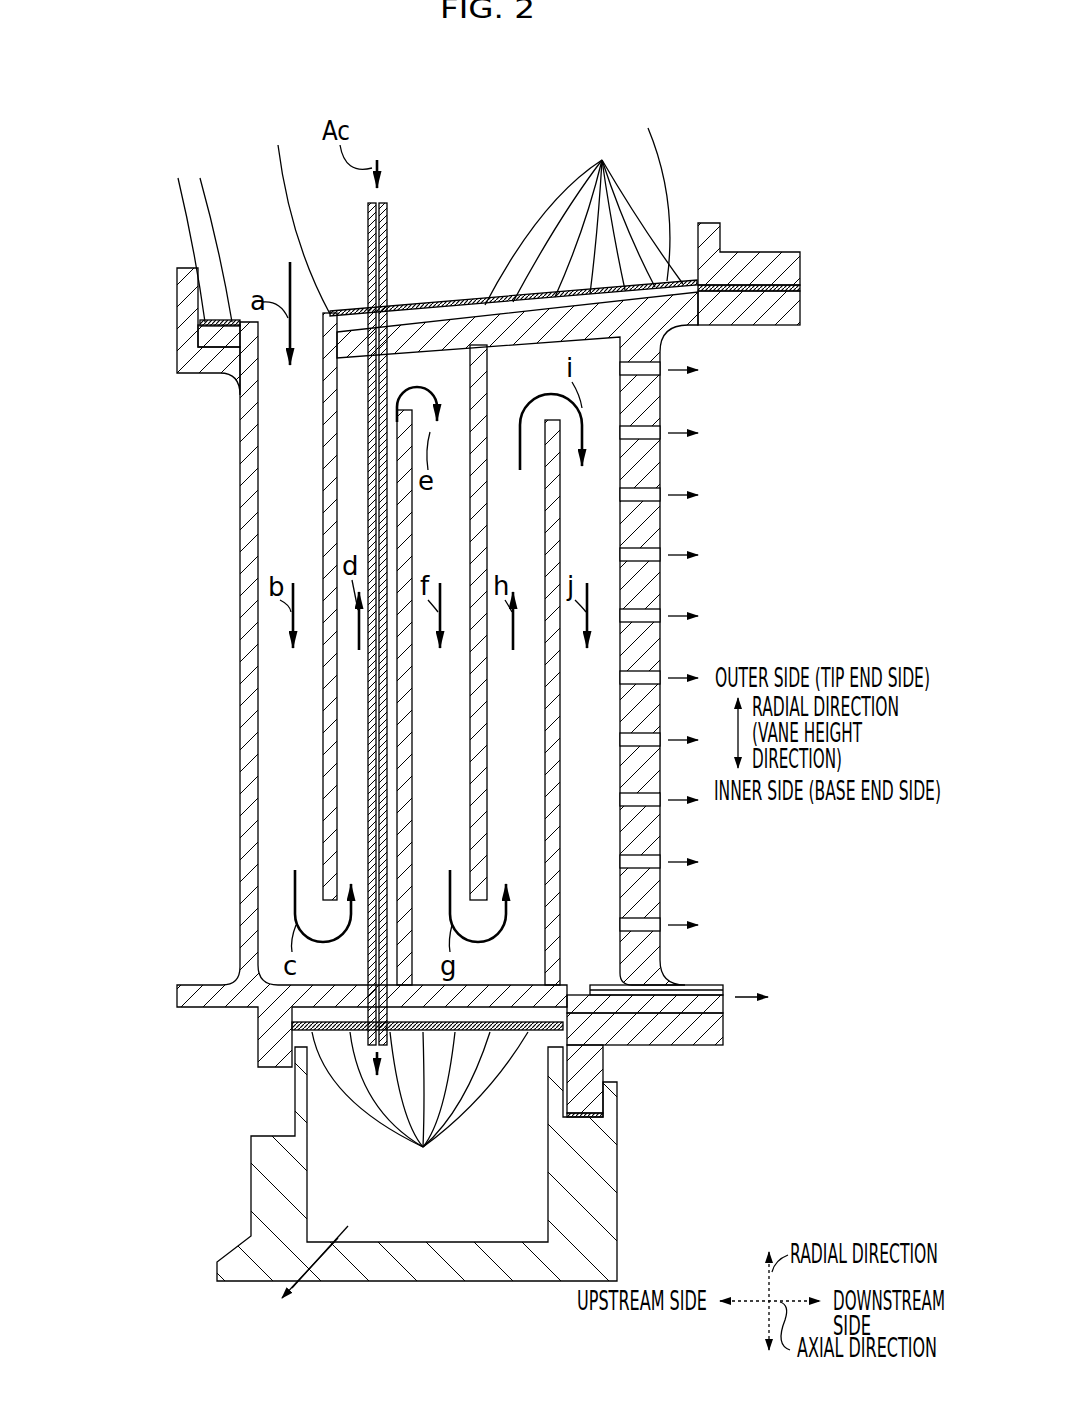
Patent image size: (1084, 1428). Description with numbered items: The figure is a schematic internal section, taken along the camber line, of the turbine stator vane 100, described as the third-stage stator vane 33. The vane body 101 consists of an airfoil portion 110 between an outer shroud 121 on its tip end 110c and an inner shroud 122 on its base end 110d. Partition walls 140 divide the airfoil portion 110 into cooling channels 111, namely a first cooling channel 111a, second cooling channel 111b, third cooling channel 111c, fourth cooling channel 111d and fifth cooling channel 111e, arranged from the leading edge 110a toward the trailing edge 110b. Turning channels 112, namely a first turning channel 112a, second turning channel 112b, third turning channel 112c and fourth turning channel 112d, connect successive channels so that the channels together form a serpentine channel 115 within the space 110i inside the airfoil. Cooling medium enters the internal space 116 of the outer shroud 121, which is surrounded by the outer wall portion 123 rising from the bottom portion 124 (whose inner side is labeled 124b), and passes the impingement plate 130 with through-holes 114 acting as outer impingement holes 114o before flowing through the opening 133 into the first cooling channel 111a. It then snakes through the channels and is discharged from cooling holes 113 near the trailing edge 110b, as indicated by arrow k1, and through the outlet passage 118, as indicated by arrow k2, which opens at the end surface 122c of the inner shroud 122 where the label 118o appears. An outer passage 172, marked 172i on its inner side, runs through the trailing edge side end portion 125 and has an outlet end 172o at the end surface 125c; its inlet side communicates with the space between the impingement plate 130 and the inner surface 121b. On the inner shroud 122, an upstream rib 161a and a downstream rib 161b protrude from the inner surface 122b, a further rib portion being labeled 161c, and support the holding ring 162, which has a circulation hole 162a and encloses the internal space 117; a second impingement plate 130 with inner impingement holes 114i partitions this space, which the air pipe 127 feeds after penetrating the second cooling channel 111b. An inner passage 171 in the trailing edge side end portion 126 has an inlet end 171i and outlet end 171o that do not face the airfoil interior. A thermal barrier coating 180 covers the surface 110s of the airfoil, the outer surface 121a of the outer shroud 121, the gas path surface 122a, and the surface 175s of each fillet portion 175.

The turbine stator vane 100 is at (673, 136).
The third-stage stator vane 33 is at (772, 91).
The vane body 101 is at (188, 570).
The airfoil portion 110 is at (235, 604).
The leading edge 110a is at (240, 800).
The trailing edge 110b is at (662, 895).
The tip end 110c is at (240, 420).
The base end 110d is at (262, 932).
The space inside the airfoil portion 110i is at (278, 760).
The surface of the airfoil portion 110s is at (238, 640).
The cooling channels 111 is at (270, 490).
The first cooling channel 111a is at (272, 491).
The second cooling channel 111b is at (355, 513).
The third cooling channel 111c is at (420, 546).
The fourth cooling channel 111d is at (500, 660).
The fifth cooling channel 111e is at (580, 700).
The turning channels 112 is at (535, 372).
The first turning channel 112a is at (275, 940).
The second turning channel 112b is at (548, 348).
The third turning channel 112c is at (622, 948).
The fourth turning channel 112d is at (662, 358).
The cooling holes 113 is at (657, 443).
The through-holes 114 is at (401, 660).
The outer impingement hole 114o is at (399, 156).
The inner impingement hole 114i is at (462, 1169).
The serpentine channel 115 is at (260, 765).
The internal space of the outer shroud 116 is at (464, 205).
The internal space of the inner shroud 117 is at (537, 1062).
The outlet passage 118 is at (705, 995).
The flange outer surface 118o is at (725, 1005).
The outer shroud 121 is at (177, 300).
The outer surface of the outer shroud 121a is at (798, 312).
The inner surface of the outer shroud 121b is at (196, 332).
The inner shroud 122 is at (196, 1000).
The outer surface of the inner shroud 122a is at (185, 992).
The inner surface of the inner shroud 122b is at (258, 1040).
The end surface of the inner shroud on the trailing edge side 122c is at (705, 1040).
The outer wall portion 123 is at (180, 268).
The bottom portion 124 is at (205, 366).
The inner space 124b is at (590, 491).
The trailing edge side end portion of the outer shroud 125 is at (780, 300).
The end surface of the outer shroud on the trailing edge side 125c is at (800, 300).
The trailing edge side end portion of the inner shroud 126 is at (687, 1015).
The air pipe 127 is at (388, 232).
The impingement plate 130 is at (246, 320).
The opening 133 is at (292, 305).
The partition walls 140 is at (322, 842).
The upstream rib 161a is at (298, 1100).
The downstream rib 161b is at (616, 1130).
The inner ring lip 161c is at (606, 1062).
The holding ring 162 is at (265, 1190).
The circulation hole 162a is at (305, 1282).
The inner passage 171 is at (585, 1103).
The inlet end 171i is at (563, 1005).
The outlet end 171o is at (725, 1030).
The outer passage 172 is at (785, 250).
The outer seal block inner surface 172i is at (700, 240).
The outlet end of the outer passage 172o is at (800, 268).
The fillet portion 175 is at (240, 327).
The surface of the fillet portion 175s is at (228, 392).
The thermal barrier coating 180 is at (200, 340).
The arrow k1 is at (652, 432).
The arrow k2 is at (748, 992).